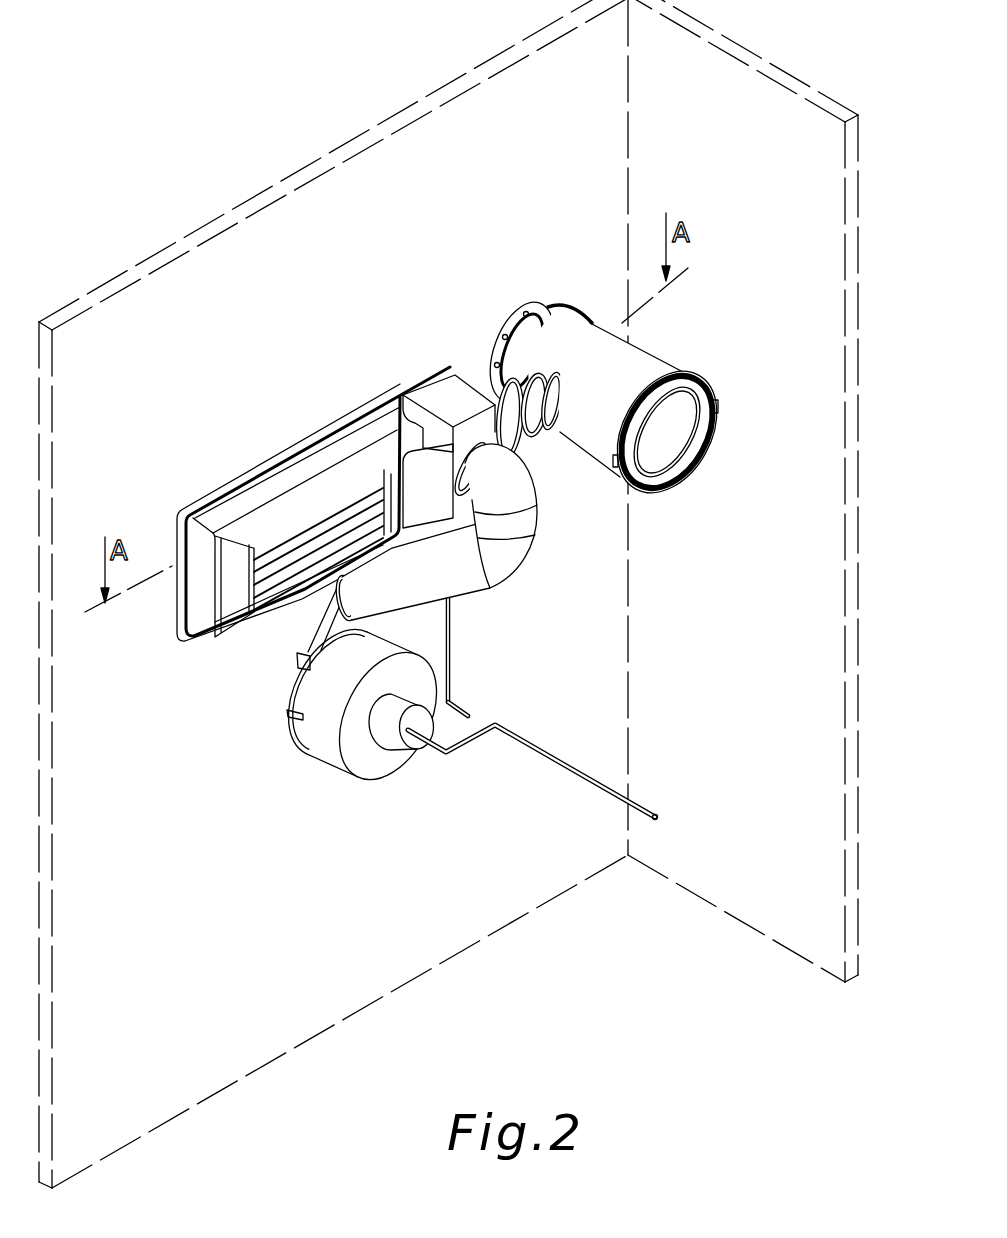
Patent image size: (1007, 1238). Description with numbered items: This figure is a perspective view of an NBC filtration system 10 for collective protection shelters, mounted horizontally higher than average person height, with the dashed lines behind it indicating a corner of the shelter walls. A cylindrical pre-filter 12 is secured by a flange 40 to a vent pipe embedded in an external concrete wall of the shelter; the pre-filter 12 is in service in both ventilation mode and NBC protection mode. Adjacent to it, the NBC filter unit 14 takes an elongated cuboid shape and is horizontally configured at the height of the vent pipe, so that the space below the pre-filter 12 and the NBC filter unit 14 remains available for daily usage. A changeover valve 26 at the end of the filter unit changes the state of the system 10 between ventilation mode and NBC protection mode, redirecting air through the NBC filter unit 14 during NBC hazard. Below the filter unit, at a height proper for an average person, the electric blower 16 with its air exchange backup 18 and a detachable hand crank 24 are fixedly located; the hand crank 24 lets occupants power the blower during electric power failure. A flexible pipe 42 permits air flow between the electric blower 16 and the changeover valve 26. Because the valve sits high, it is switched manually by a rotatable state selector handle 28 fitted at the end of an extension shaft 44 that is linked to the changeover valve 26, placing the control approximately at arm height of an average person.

The NBC filtration system 10 is at (723, 336).
The pre-filter 12 is at (633, 341).
The NBC filter unit 14 is at (318, 457).
The electric blower 16 is at (320, 750).
The air exchange backup 18 is at (403, 742).
The hand crank 24 is at (547, 748).
The changeover valve 26 is at (438, 393).
The state selector handle 28 is at (466, 708).
The flange 40 is at (513, 315).
The flexible pipe 42 is at (473, 578).
The extension shaft 44 is at (452, 640).